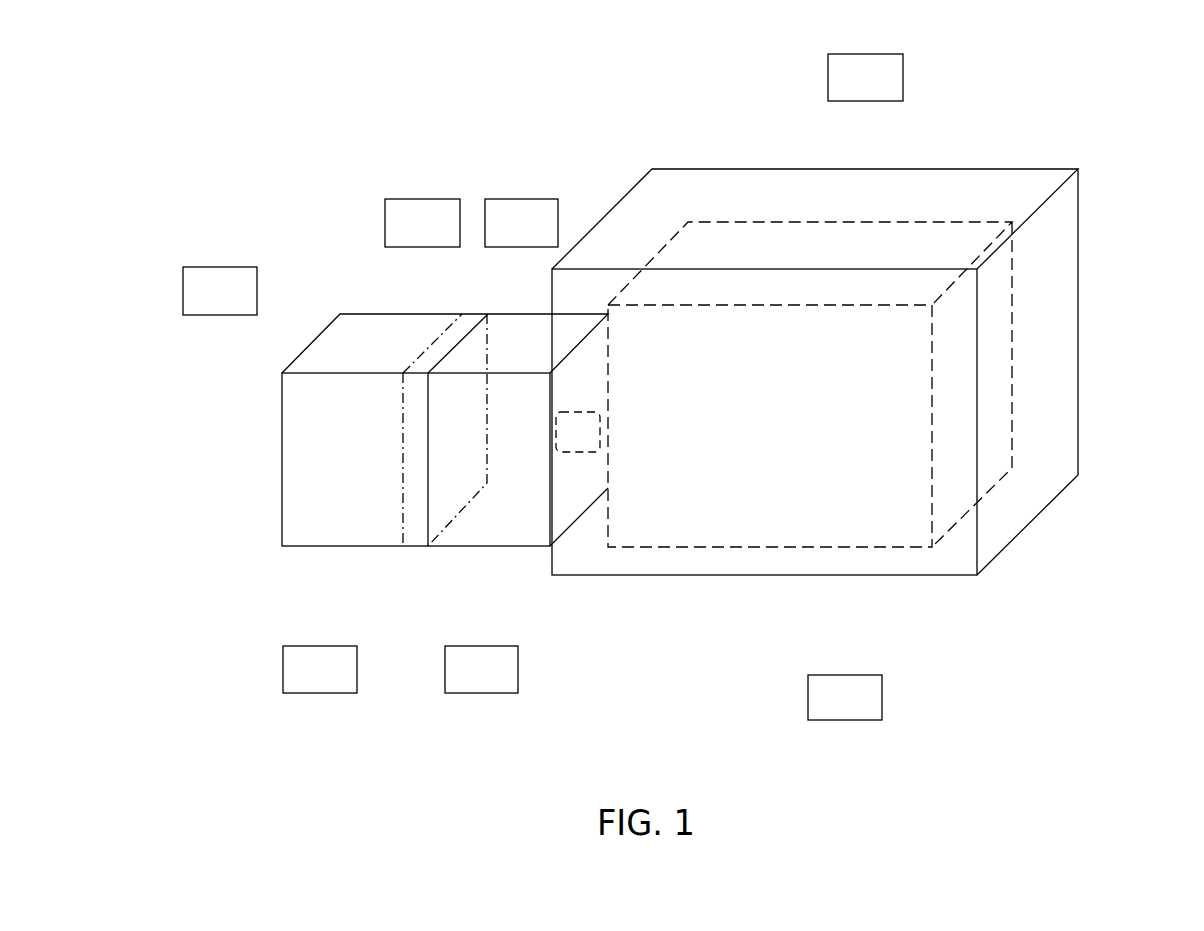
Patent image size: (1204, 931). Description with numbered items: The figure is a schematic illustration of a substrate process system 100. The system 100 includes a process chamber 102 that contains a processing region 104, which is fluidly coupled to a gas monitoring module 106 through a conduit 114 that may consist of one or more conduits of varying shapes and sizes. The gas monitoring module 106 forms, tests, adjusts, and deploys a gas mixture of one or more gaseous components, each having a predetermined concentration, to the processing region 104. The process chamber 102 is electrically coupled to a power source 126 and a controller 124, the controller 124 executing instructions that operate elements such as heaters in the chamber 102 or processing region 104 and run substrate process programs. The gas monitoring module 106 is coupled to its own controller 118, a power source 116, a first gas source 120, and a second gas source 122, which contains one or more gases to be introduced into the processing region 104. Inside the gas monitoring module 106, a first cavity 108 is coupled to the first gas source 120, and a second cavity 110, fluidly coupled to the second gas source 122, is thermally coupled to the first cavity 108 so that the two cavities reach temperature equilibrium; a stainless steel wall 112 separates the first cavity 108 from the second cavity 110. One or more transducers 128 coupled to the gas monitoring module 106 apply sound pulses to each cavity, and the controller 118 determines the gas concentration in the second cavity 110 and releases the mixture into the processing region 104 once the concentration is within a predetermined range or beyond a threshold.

The substrate process system 100 is at (286, 74).
The process chamber 102 is at (1084, 242).
The processing region 104 is at (1001, 361).
The gas monitoring module 106 is at (270, 458).
The first cavity 108 is at (357, 432).
The second cavity 110 is at (533, 522).
The wall 112 is at (475, 453).
The conduit 114 is at (576, 464).
The power source 116 is at (282, 373).
The controller 118 is at (522, 314).
The first gas source 120 is at (320, 546).
The second gas source 122 is at (482, 546).
The controller 124 is at (845, 575).
The power source 126 is at (866, 169).
The transducers 128 is at (423, 314).